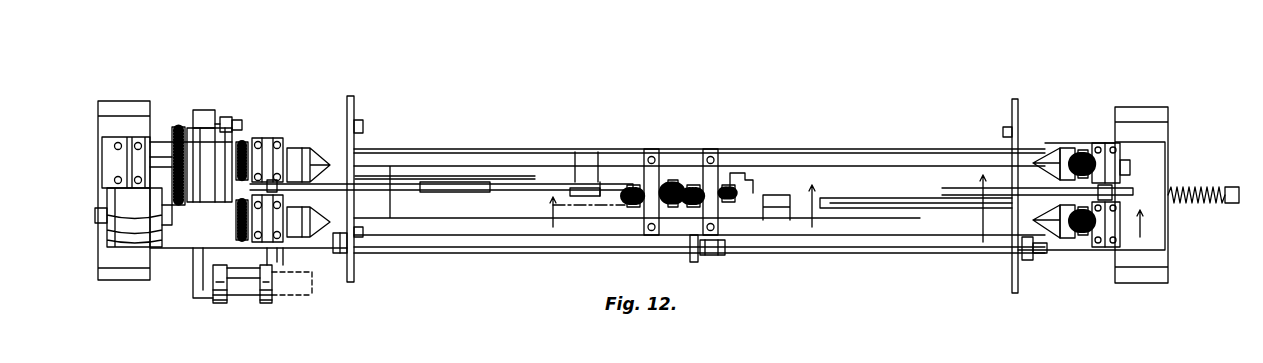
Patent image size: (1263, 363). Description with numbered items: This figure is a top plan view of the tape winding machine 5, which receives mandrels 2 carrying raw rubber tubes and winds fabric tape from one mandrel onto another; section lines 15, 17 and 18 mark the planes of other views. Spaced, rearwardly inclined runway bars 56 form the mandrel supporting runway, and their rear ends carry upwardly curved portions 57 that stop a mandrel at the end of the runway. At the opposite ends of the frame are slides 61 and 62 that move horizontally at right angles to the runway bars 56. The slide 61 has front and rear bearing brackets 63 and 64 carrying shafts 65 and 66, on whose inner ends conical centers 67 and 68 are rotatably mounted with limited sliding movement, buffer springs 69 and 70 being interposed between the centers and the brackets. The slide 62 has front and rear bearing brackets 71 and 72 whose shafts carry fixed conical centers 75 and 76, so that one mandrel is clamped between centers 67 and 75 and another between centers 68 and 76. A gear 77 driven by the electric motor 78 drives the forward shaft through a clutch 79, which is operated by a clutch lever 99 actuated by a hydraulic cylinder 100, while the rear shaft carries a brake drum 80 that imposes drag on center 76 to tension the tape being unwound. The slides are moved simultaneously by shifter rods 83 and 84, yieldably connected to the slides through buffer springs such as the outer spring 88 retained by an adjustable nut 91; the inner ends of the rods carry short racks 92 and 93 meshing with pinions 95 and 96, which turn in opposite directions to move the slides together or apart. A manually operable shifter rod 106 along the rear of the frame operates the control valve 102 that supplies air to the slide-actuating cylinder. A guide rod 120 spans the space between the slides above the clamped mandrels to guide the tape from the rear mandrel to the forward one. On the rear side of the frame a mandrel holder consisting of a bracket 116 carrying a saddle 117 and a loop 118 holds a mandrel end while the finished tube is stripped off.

The mandrel 2 is at (293, 295).
The tape winding machine 5 is at (812, 153).
The section line 15 is at (342, 62).
The section line 17 is at (1120, 283).
The section line 18 is at (933, 297).
The runway bars 56 is at (356, 103).
The upwardly curved portions 57 is at (356, 278).
The slide 61 is at (1160, 140).
The slide 62 is at (162, 250).
The front bearing bracket 63 is at (1096, 143).
The rear bearing bracket 64 is at (1096, 250).
The shaft 65 is at (1130, 168).
The shaft 66 is at (1100, 248).
The conical center 67 is at (1040, 152).
The conical center 68 is at (1045, 240).
The buffer spring 69 is at (1085, 156).
The buffer spring 70 is at (1035, 260).
The front bearing bracket 71 is at (280, 140).
The rear bearing bracket 72 is at (290, 248).
The conical center 75 is at (312, 150).
The conical center 76 is at (340, 255).
The gear 77 is at (178, 127).
The electric motor 78 is at (133, 217).
The clutch 79 is at (236, 190).
The brake drum 80 is at (240, 225).
The shifter rod 83 is at (866, 205).
The shifter rod 84 is at (490, 190).
The outer buffer spring 88 is at (1208, 178).
The nut 91 is at (1224, 212).
The short rack 92 is at (793, 185).
The short rack 93 is at (568, 182).
The pinion 95 is at (736, 175).
The pinion 96 is at (650, 152).
The clutch lever 99 is at (240, 120).
The hydraulic cylinder 100 is at (222, 114).
The control valve 102 is at (700, 262).
The shifter rod 106 is at (464, 253).
The bracket 116 is at (196, 297).
The saddle 117 is at (268, 303).
The loop 118 is at (222, 303).
The guide rod 120 is at (405, 180).